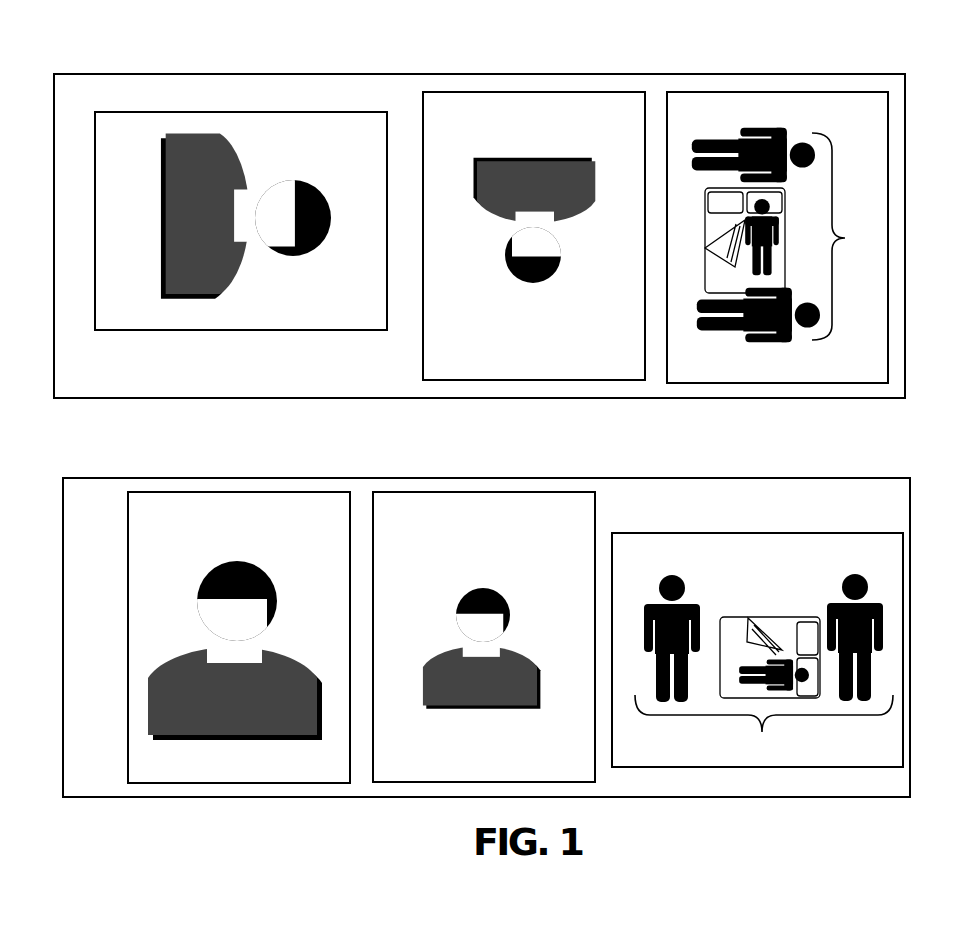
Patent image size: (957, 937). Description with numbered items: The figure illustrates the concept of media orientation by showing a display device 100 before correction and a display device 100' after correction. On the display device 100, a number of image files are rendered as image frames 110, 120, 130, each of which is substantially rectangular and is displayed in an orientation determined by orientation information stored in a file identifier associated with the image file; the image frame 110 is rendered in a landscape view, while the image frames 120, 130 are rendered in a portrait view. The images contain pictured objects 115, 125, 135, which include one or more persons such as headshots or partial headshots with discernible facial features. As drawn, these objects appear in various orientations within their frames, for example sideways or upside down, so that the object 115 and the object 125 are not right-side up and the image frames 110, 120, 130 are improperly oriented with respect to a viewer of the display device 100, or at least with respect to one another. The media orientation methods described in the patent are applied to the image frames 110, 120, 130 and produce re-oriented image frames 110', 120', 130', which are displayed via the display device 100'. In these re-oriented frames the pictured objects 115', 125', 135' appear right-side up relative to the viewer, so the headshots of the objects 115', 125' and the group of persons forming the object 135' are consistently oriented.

The display device 100 is at (479, 212).
The image frame 110 is at (241, 183).
The pictured object 115 is at (271, 215).
The image frame 120 is at (534, 199).
The pictured object 125 is at (535, 197).
The image frame 130 is at (777, 200).
The pictured object 135 is at (789, 235).
The display device 100' is at (486, 615).
The re-oriented image frame 110' is at (239, 601).
The pictured object 115' is at (235, 629).
The re-oriented image frame 120' is at (484, 600).
The pictured object 125' is at (492, 621).
The re-oriented image frame 130' is at (757, 605).
The pictured object 135' is at (764, 668).